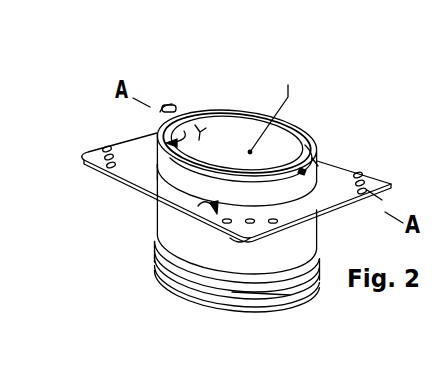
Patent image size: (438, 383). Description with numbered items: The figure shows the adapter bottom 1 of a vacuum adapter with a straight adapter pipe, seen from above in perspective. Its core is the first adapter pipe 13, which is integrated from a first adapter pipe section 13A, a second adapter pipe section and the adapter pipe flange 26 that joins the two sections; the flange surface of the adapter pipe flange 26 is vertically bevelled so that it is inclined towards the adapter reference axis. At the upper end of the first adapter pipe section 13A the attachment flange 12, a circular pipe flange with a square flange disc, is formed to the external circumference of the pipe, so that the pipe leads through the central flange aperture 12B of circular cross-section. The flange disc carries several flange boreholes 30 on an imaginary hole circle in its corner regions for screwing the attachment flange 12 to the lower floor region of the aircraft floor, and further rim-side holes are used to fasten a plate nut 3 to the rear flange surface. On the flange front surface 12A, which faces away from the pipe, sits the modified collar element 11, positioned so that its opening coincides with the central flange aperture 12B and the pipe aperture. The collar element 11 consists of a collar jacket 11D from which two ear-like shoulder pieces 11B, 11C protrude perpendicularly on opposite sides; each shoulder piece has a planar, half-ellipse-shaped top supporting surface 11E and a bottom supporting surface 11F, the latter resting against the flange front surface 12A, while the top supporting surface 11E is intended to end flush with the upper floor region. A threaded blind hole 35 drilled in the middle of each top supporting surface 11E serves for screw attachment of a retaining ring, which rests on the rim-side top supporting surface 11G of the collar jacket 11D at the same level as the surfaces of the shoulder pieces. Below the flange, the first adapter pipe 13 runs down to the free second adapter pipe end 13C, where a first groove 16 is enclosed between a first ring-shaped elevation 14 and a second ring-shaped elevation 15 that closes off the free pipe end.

The adapter bottom 1 is at (258, 93).
The plate nut 3 is at (227, 248).
The collar element 11 is at (342, 159).
The shoulder piece 11B is at (173, 107).
The shoulder piece 11C is at (318, 163).
The collar jacket 11D is at (160, 117).
The top supporting surface 11E is at (207, 157).
The bottom supporting surface 11F is at (150, 170).
The top supporting surface 11G is at (302, 171).
The attachment flange 12 is at (312, 220).
The flange front surface 12A is at (230, 200).
The central flange aperture 12B is at (236, 155).
The first adapter pipe 13 is at (182, 250).
The first adapter pipe section 13A is at (294, 150).
The second adapter pipe end 13C is at (252, 316).
The first ring-shaped elevation 14 is at (168, 280).
The second ring-shaped elevation 15 is at (167, 272).
The first groove 16 is at (180, 297).
The adapter pipe flange 26 is at (201, 158).
The flange boreholes 30 is at (107, 147).
The blind hole 35 is at (323, 161).